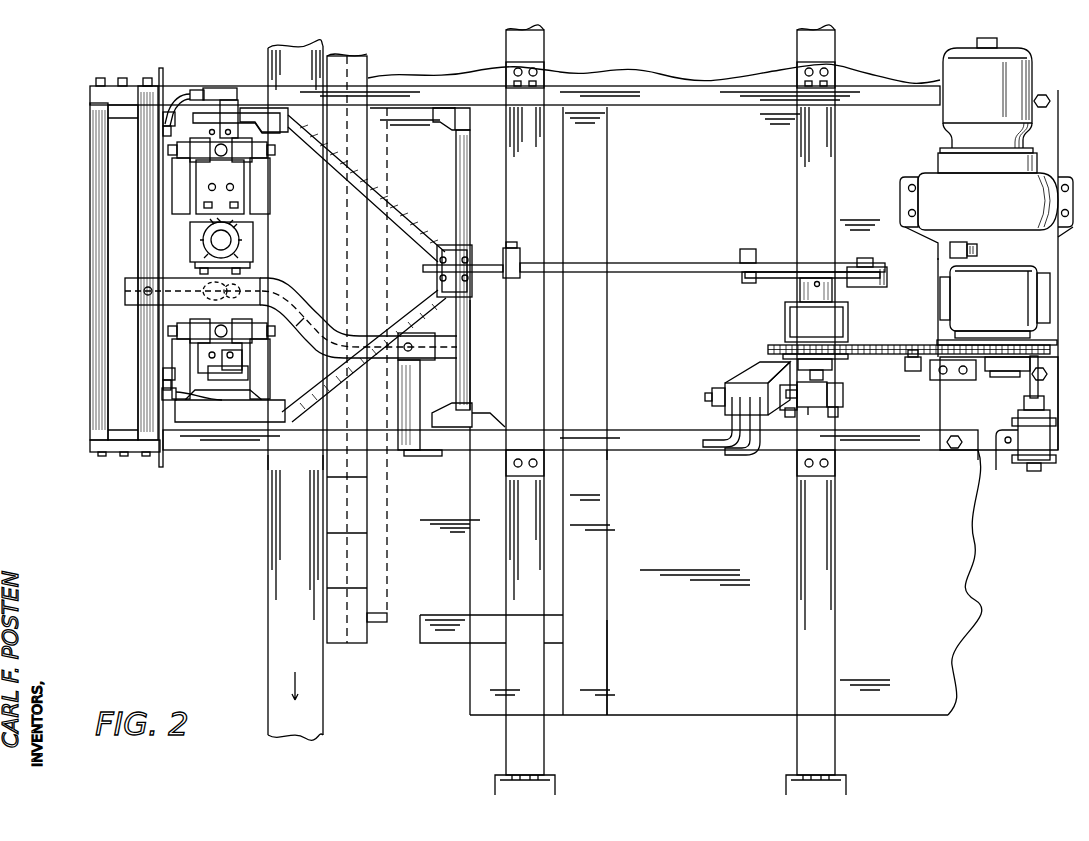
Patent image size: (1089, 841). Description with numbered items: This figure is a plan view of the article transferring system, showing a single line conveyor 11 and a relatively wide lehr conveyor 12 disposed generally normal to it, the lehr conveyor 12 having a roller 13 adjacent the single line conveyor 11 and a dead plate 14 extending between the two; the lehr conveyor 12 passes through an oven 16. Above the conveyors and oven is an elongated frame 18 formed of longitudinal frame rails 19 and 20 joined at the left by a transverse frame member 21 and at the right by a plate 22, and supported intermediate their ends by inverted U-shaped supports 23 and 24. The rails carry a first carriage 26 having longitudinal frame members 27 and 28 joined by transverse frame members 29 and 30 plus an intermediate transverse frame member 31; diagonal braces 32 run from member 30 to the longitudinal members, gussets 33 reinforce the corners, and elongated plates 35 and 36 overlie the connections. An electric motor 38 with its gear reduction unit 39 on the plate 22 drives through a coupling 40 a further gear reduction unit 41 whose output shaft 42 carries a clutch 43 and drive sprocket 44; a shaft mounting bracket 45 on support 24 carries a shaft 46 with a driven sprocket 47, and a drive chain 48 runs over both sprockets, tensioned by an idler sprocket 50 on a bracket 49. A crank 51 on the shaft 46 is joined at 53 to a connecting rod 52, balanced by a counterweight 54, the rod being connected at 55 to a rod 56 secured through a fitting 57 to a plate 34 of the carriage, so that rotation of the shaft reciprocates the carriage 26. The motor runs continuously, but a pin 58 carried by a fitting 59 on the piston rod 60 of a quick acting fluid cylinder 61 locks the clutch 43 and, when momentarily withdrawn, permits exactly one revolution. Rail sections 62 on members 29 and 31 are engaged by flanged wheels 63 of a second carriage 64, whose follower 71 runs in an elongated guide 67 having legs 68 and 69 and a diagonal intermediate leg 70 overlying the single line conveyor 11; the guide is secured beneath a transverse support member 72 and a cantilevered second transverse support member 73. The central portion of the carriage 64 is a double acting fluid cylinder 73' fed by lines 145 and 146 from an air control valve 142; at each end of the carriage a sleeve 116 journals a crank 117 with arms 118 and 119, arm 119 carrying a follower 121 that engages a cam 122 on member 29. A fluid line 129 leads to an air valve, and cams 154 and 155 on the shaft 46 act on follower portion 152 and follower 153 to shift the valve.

The single line conveyor 11 is at (266, 700).
The lehr conveyor 12 is at (418, 630).
The roller 13 is at (380, 625).
The dead plate 14 is at (342, 642).
The oven 16 is at (716, 716).
The elongated frame 18 is at (645, 448).
The longitudinal frame rail 19 is at (680, 92).
The longitudinal frame rail 20 is at (630, 438).
The transverse frame member 21 is at (89, 376).
The plate 22 is at (944, 418).
The inverted U-shaped support 23 is at (504, 540).
The inverted U-shaped support 24 is at (796, 520).
The first carriage 26 is at (478, 360).
The longitudinal frame member 27 is at (418, 114).
The longitudinal frame member 28 is at (312, 456).
The transverse frame member 29 is at (190, 222).
The transverse frame member 30 is at (470, 192).
The intermediate transverse frame member 31 is at (256, 238).
The diagonal brace 32 is at (418, 226).
The gusset 33 is at (455, 128).
The plate 34 is at (470, 292).
The elongated plate 35 is at (262, 106).
The elongated plate 36 is at (222, 424).
The electric motor 38 is at (1032, 70).
The gear reduction unit 39 is at (918, 190).
The coupling 40 is at (948, 252).
The gear reduction unit 41 is at (940, 313).
The output shaft 42 is at (1001, 334).
The clutch 43 is at (992, 368).
The drive sprocket 44 is at (1044, 350).
The shaft mounting bracket 45 is at (848, 330).
The shaft 46 is at (828, 374).
The driven sprocket 47 is at (798, 358).
The drive chain 48 is at (866, 345).
The bracket 49 is at (932, 380).
The idler sprocket 50 is at (908, 362).
The crank 51 is at (776, 278).
The connecting rod 52 is at (660, 272).
The connection 53 is at (746, 250).
The counterweight 54 is at (888, 278).
The connection 55 is at (514, 278).
The rod 56 is at (500, 256).
The fitting 57 is at (432, 284).
The pin 58 is at (1040, 380).
The fitting 59 is at (1022, 394).
The piston rod 60 is at (1018, 416).
The quick acting fluid cylinder 61 is at (1012, 457).
The rail section 62 is at (172, 176).
The flanged wheel 63 is at (168, 150).
The second carriage 64 is at (242, 270).
The elongated guide 67 is at (304, 314).
The first leg 68 is at (125, 284).
The second leg 69 is at (430, 366).
The intermediate leg 70 is at (288, 296).
The follower 71 is at (202, 292).
The transverse support member 72 is at (150, 456).
The second transverse support member 73 is at (420, 425).
The fluid cylinder 73' is at (255, 229).
The sleeve 116 is at (230, 88).
The crank 117 is at (200, 90).
The arm 118 is at (318, 140).
The arm 119 is at (178, 92).
The follower 121 is at (168, 110).
The cam 122 is at (163, 128).
The fluid line 129 is at (984, 457).
The air control valve 142 is at (722, 380).
The line 145 is at (705, 414).
The line 146 is at (740, 452).
The follower portion 152 is at (790, 417).
The follower 153 is at (843, 388).
The cam 154 is at (808, 415).
The cam 155 is at (790, 388).